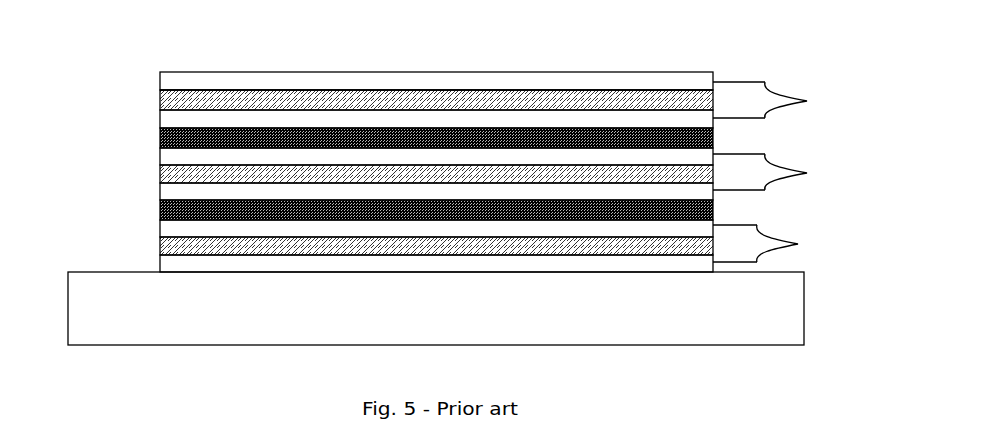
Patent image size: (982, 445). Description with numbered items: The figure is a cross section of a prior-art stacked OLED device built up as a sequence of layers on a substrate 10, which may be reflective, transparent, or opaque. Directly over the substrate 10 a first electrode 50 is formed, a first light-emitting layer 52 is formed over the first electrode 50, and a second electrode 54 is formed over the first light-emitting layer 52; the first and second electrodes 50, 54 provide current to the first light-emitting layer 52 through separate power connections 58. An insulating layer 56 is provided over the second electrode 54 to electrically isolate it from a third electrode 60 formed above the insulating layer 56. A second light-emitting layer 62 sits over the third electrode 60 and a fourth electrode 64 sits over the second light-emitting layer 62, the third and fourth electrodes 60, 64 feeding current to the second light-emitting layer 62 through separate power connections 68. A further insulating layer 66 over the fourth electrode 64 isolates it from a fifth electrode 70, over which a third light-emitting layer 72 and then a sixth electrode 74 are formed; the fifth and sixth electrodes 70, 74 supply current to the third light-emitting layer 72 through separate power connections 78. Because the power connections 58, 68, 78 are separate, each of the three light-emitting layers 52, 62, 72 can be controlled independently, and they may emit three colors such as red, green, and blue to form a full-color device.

The substrate 10 is at (804, 326).
The first electrode 50 is at (362, 273).
The first light-emitting layer 52 is at (435, 253).
The second electrode 54 is at (502, 237).
The insulating layer 56 is at (160, 210).
The power connections 58 is at (769, 243).
The third electrode 60 is at (160, 193).
The second light-emitting layer 62 is at (160, 172).
The fourth electrode 64 is at (160, 155).
The insulating layer 66 is at (160, 138).
The power connections 68 is at (773, 172).
The fifth electrode 70 is at (529, 107).
The third light-emitting layer 72 is at (419, 90).
The sixth electrode 74 is at (333, 72).
The power connections 78 is at (773, 100).